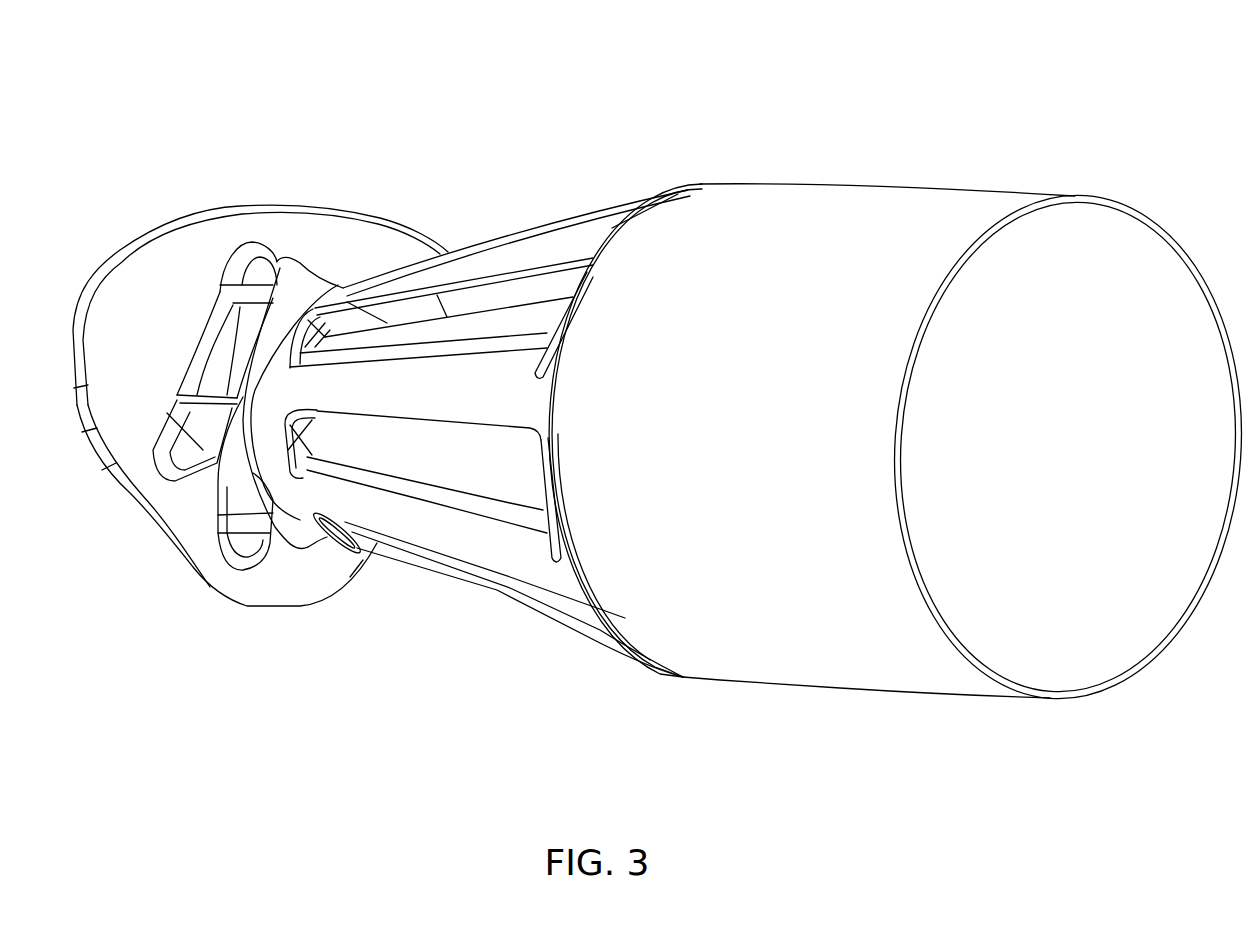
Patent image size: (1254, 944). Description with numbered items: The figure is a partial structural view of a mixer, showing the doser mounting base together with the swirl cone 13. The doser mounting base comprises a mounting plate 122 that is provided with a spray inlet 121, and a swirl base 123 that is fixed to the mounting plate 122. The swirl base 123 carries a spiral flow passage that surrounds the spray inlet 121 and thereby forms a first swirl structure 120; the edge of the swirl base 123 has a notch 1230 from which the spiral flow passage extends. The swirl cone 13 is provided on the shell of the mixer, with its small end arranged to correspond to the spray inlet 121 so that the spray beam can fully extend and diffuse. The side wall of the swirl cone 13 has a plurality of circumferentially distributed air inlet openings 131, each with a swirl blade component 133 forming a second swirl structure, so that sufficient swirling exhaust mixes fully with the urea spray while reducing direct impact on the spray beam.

The swirl cone 13 is at (555, 238).
The air inlet opening 131 is at (503, 295).
The swirl blade component 133 is at (443, 332).
The mounting plate 122 is at (334, 238).
The swirl base 123 is at (272, 265).
The notch 1230 is at (217, 485).
The first swirl structure 120 is at (250, 493).
The spray inlet 121 is at (297, 443).